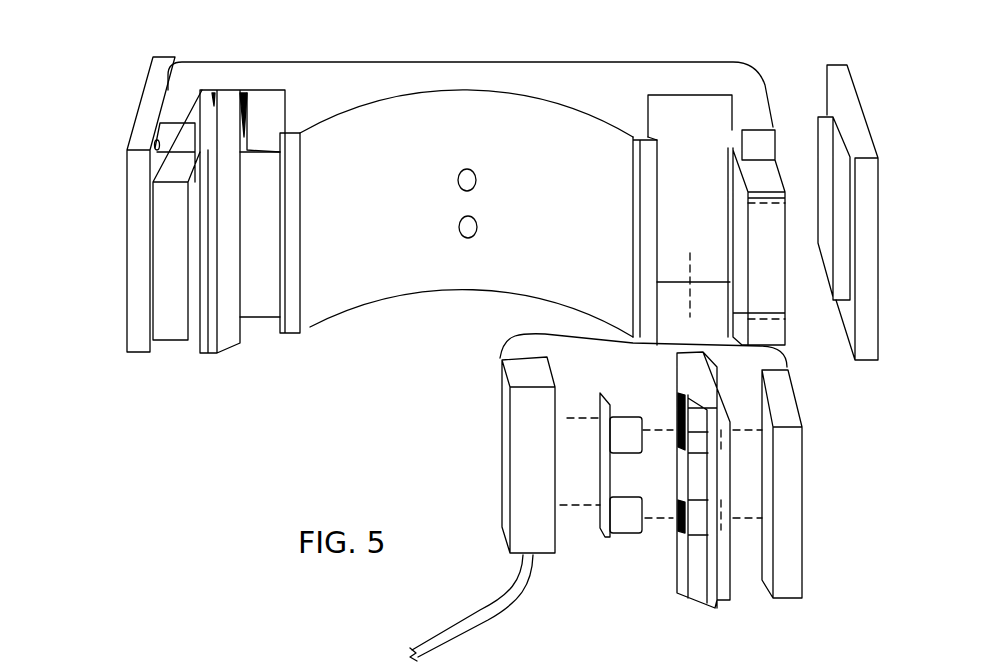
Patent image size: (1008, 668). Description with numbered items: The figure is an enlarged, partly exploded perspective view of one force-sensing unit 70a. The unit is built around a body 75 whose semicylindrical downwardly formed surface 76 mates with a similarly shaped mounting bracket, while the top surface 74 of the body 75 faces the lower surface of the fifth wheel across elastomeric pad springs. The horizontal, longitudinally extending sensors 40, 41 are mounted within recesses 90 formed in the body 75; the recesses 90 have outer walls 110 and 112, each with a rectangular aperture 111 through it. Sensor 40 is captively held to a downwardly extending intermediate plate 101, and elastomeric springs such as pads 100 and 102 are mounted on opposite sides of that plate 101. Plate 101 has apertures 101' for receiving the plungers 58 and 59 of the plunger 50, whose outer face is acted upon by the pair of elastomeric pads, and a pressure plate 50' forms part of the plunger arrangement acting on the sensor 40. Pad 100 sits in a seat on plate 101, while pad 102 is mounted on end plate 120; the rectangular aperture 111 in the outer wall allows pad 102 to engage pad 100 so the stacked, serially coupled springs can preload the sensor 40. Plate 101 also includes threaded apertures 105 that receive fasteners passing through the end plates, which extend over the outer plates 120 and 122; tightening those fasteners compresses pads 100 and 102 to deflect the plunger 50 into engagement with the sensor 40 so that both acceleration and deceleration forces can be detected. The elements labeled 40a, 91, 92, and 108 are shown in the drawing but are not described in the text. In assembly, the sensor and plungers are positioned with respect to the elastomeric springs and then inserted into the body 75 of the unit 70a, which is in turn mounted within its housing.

The force-sensing unit 70a is at (440, 52).
The top surface of body 74 is at (272, 60).
The body 75 is at (557, 82).
The semicylindrical downwardly formed surface 76 is at (367, 260).
The recess 90 is at (688, 125).
The slots 91 is at (275, 104).
The top edge of insulating plate 92 is at (230, 88).
The threaded aperture 105 is at (247, 145).
The slot 108 is at (247, 128).
The outer wall of recess 110 is at (772, 103).
The rectangular aperture 111 is at (765, 317).
The outer wall of recess 112 is at (173, 350).
The end plate 120 is at (878, 302).
The outer plate 122 is at (133, 172).
The intermediate plate 101 is at (454, 368).
The aperture 101' is at (647, 503).
The elastomeric spring pad 102 is at (833, 302).
The sensor 41 is at (260, 320).
The sensor 40 is at (518, 488).
The sensor housing front 40a is at (553, 422).
The plunger 50 is at (661, 444).
The pressure plate 50' is at (580, 572).
The plunger 58 is at (627, 417).
The plunger 59 is at (630, 540).
The elastomeric spring pad 100 is at (803, 570).